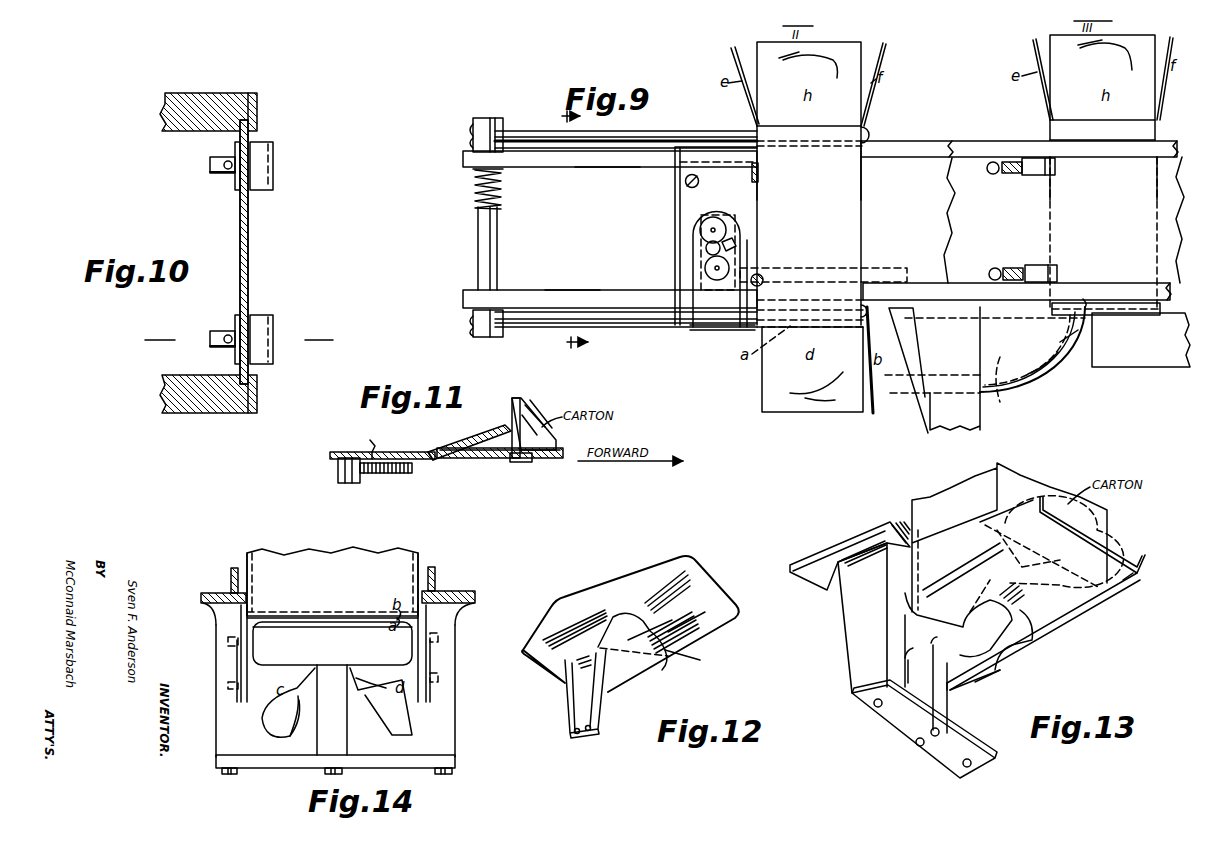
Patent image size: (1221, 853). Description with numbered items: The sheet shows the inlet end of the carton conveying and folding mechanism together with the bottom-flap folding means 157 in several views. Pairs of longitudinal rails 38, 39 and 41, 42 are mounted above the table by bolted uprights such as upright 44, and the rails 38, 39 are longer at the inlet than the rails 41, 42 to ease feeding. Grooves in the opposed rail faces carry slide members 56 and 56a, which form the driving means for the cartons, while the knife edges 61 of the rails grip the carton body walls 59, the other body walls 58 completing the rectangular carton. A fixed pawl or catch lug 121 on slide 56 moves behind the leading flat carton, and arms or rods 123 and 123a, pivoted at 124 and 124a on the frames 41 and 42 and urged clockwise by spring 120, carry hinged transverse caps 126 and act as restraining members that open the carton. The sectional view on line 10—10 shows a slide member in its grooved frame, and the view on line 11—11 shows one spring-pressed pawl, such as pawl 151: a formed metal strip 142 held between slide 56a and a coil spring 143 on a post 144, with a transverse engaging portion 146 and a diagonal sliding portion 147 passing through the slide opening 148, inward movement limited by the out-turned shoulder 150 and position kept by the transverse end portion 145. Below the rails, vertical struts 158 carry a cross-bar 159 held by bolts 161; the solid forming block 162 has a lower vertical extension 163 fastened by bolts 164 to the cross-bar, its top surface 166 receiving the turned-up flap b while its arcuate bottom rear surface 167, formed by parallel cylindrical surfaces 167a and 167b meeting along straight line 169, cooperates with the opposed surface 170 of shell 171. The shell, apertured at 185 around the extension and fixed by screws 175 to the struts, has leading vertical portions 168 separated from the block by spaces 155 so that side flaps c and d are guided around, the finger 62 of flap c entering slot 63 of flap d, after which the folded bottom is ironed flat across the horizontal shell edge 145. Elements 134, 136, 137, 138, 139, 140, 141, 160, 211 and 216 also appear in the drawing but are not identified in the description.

In FIG. 9, the line 10— 10 is at (566, 233).
In FIG. 10, the line 11— 11 is at (241, 341).
In FIG. 9, the rail 38 is at (1009, 149).
In FIG. 9, the rail 39 is at (970, 292).
In FIG. 14, the rail 39 is at (456, 589).
In FIG. 9, the rail 41 is at (628, 151).
In FIG. 10, the rail 41 is at (239, 94).
In FIG. 9, the rail 42 is at (596, 297).
In FIG. 10, the rail 42 is at (200, 378).
In FIG. 14, the rail 42 is at (202, 591).
In FIG. 9, the bolted upright 44 is at (674, 176).
In FIG. 9, the slide member 56 is at (981, 213).
In FIG. 14, the slide member 56 is at (435, 572).
In FIG. 9, the slide member 56a is at (924, 208).
In FIG. 10, the slide member 56a is at (263, 252).
In FIG. 11, the slide member 56a is at (422, 450).
In FIG. 14, the slide member 56a is at (232, 576).
In FIG. 9, the body wall 58 is at (756, 203).
In FIG. 14, the body wall 58 is at (332, 581).
In FIG. 9, the body wall 59 is at (957, 180).
In FIG. 14, the body wall 59 is at (247, 554).
In FIG. 9, the knife edge 61 is at (592, 152).
In FIG. 10, the knife edge 61 is at (255, 99).
In FIG. 14, the finger 62 is at (290, 735).
In FIG. 13, the finger 62 is at (967, 632).
In FIG. 9, the slot 63 is at (800, 392).
In FIG. 14, the slot 63 is at (398, 723).
In FIG. 13, the slot 63 is at (1030, 645).
In FIG. 9, the spring 120 is at (475, 190).
In FIG. 9, the fixed pawl 121 is at (752, 170).
In FIG. 9, the arm 123 is at (622, 129).
In FIG. 9, the arm 123a is at (628, 326).
In FIG. 9, the pivot 124 is at (483, 121).
In FIG. 9, the pivot 124a is at (483, 335).
In FIG. 9, the hinged transverse cap 126 is at (867, 132).
In FIG. 9, the bracket plate 134 is at (692, 200).
In FIG. 9, the roller bracket 136 is at (741, 330).
In FIG. 9, the roller 137 is at (762, 257).
In FIG. 9, the pivot 138 is at (772, 270).
In FIG. 9, the roller 139 is at (749, 269).
In FIG. 11, the bolt head 140 is at (376, 450).
In FIG. 9, the slot 141 is at (877, 267).
In FIG. 11, the metal strip 142 is at (431, 460).
In FIG. 11, the coil spring 143 is at (400, 473).
In FIG. 11, the post 144 is at (349, 481).
In FIG. 11, the transverse end portion 145 is at (374, 449).
In FIG. 13, the transverse end portion 145 is at (1106, 539).
In FIG. 11, the transverse engaging portion 146 is at (501, 453).
In FIG. 11, the diagonal sliding portion 147 is at (473, 439).
In FIG. 11, the slide opening 148 is at (513, 458).
In FIG. 11, the out-turned shoulder 150 is at (522, 459).
In FIG. 9, the pawl 151 is at (1040, 173).
In FIG. 14, the space 155 is at (242, 635).
In FIG. 9, the folding means 157 is at (1027, 380).
In FIG. 13, the folding means 157 is at (1097, 622).
In FIG. 9, the vertical supporting strut 158 is at (955, 368).
In FIG. 14, the vertical supporting strut 158 is at (218, 660).
In FIG. 13, the vertical supporting strut 158 is at (862, 618).
In FIG. 14, the cross-bar 159 is at (295, 761).
In FIG. 14, the inner wall 160 is at (238, 670).
In FIG. 14, the bolt 161 is at (222, 773).
In FIG. 9, the forming block 162 is at (902, 378).
In FIG. 14, the forming block 162 is at (332, 643).
In FIG. 12, the forming block 162 is at (617, 587).
In FIG. 14, the lower vertical extension 163 is at (334, 710).
In FIG. 12, the lower vertical extension 163 is at (578, 702).
In FIG. 13, the lower vertical extension 163 is at (926, 685).
In FIG. 9, the bolt 164 is at (900, 377).
In FIG. 14, the bolt 164 is at (300, 619).
In FIG. 12, the bolt 164 is at (573, 637).
In FIG. 14, the top surface 166 is at (340, 616).
In FIG. 9, the bottom rear surface 167 is at (1025, 379).
In FIG. 12, the bottom rear surface 167 is at (715, 596).
In FIG. 12, the cylindrical surface 167a is at (658, 608).
In FIG. 12, the cylindrical surface 167b is at (685, 637).
In FIG. 12, the leading vertical portion 168 is at (680, 647).
In FIG. 12, the straight line 169 is at (674, 621).
In FIG. 9, the shell surface 170 is at (1027, 359).
In FIG. 14, the shell surface 170 is at (364, 680).
In FIG. 13, the shell surface 170 is at (1098, 523).
In FIG. 9, the shell 171 is at (1058, 338).
In FIG. 13, the shell 171 is at (1123, 580).
In FIG. 14, the screw 175 is at (228, 684).
In FIG. 13, the aperture 185 is at (996, 680).
In FIG. 9, the plate 211 is at (1172, 310).
In FIG. 9, the block 216 is at (1148, 353).